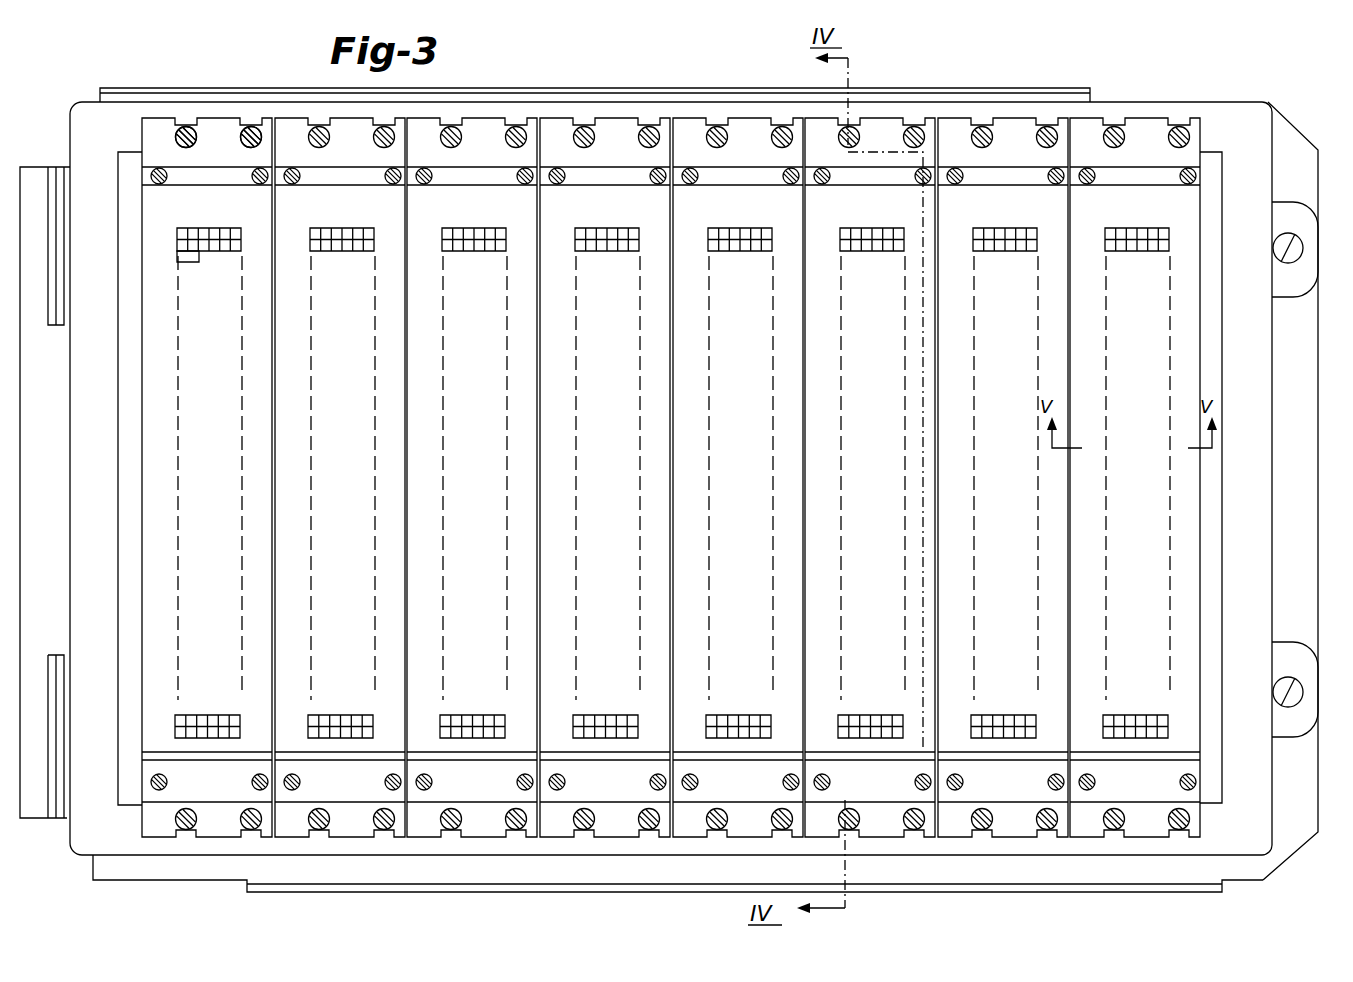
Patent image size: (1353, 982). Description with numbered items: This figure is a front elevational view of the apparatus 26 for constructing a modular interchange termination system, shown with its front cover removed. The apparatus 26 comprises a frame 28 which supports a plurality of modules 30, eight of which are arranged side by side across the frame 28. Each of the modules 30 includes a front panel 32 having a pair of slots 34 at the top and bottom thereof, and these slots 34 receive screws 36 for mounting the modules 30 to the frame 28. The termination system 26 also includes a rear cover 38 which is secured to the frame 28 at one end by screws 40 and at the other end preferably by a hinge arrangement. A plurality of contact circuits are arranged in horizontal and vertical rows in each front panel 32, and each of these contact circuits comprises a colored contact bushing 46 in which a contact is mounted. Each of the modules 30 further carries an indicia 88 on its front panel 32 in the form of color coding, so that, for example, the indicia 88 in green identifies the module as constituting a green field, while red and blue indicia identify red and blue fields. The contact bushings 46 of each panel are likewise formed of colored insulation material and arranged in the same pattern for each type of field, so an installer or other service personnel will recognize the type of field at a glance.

The apparatus for constructing a modular interchange termination system 26 is at (1220, 97).
The frame 28 is at (1127, 107).
The modules 30 is at (138, 137).
The front panel 32 is at (152, 478).
The slots 34 is at (186, 126).
The screws 36 is at (244, 142).
The rear cover 38 is at (1287, 137).
The screws 40 is at (1304, 242).
The contact bushing 46 is at (238, 734).
The indicia 88 is at (204, 181).